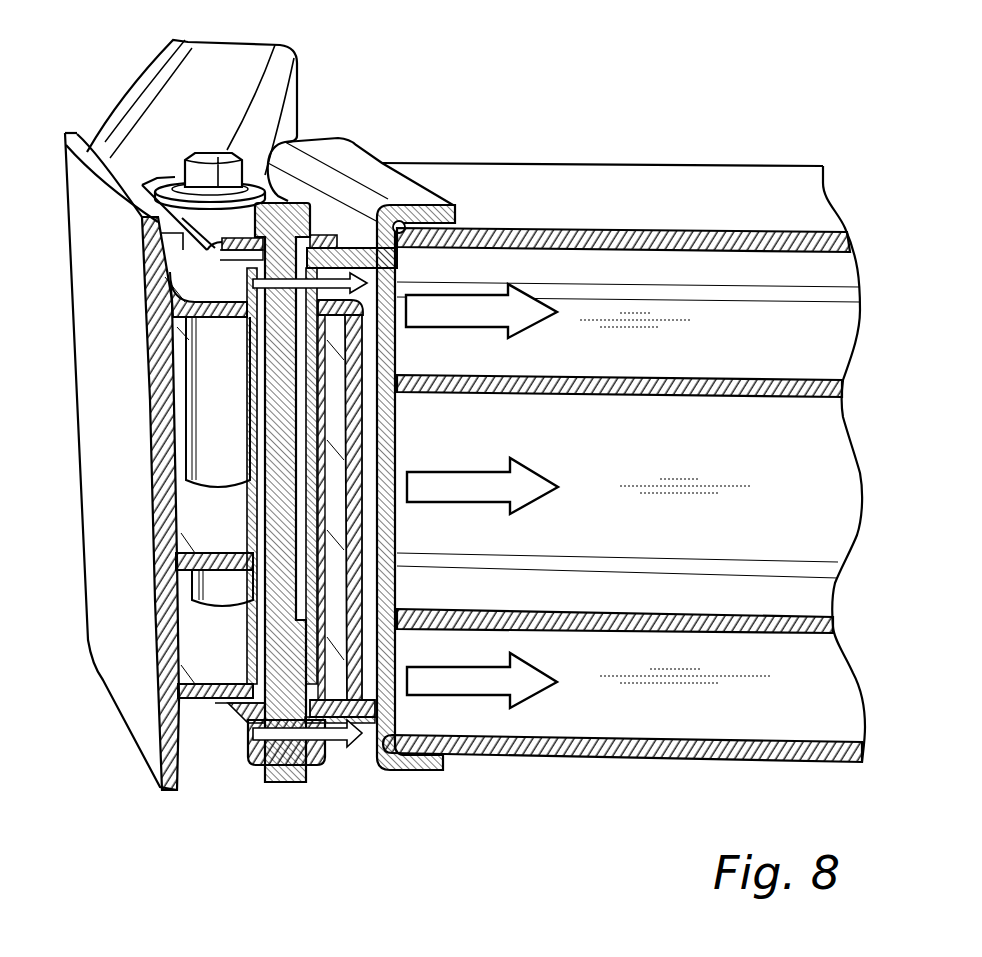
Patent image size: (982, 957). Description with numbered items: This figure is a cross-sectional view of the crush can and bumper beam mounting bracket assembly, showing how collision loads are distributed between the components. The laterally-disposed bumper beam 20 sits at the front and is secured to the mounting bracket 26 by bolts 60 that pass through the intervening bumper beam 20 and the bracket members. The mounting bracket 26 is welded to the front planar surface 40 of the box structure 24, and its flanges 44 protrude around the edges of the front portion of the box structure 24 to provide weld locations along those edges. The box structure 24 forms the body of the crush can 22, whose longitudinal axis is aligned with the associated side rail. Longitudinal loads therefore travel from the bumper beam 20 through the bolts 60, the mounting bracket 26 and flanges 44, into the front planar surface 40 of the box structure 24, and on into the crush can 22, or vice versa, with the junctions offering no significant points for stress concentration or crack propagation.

The bumper beam 20 is at (128, 178).
The crush can 22 is at (623, 407).
The box structure 24 is at (715, 231).
The mounting bracket 26 is at (350, 250).
The front planar surface 40 is at (417, 357).
The flanges 44 is at (436, 205).
The bolts 60 is at (289, 201).